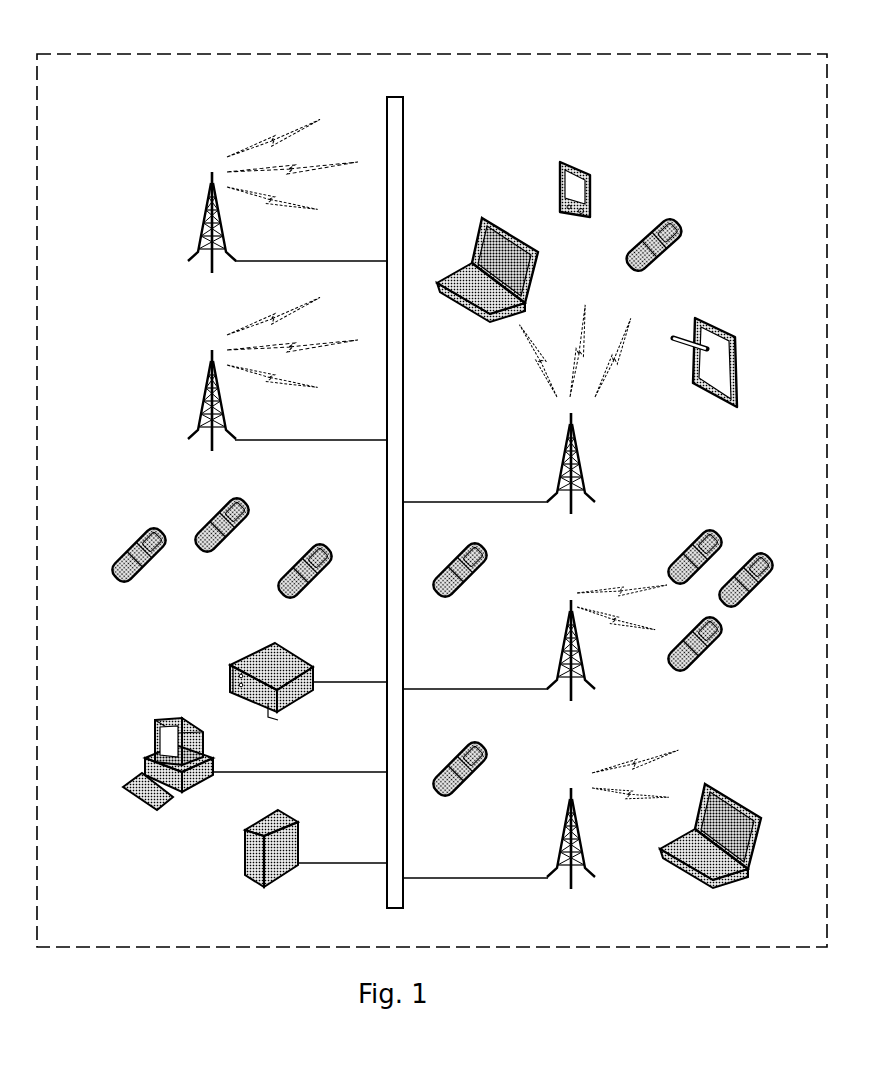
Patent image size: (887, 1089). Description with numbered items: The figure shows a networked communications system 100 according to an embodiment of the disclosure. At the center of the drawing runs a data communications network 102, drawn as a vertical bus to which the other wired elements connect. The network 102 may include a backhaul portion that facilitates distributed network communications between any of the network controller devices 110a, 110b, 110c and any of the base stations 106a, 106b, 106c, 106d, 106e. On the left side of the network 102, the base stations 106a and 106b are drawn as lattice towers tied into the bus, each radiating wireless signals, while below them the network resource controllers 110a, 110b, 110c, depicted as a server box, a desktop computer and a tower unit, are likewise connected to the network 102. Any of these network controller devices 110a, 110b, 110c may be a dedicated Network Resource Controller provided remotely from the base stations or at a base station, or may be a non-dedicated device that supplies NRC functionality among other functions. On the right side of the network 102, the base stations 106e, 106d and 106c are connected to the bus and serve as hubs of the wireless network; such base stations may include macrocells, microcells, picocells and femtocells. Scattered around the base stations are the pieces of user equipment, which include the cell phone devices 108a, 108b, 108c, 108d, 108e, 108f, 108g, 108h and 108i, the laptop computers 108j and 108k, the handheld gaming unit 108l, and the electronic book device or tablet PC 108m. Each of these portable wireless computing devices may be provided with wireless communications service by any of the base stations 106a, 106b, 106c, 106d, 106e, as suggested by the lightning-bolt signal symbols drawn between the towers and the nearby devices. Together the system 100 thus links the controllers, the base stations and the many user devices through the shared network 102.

The networked communications system 100 is at (300, 28).
The data communications network 102 is at (387, 104).
The base station 106a is at (205, 215).
The base station 106b is at (205, 398).
The base station 106c is at (560, 828).
The base station 106d is at (560, 648).
The base station 106e is at (588, 472).
The cell phone device 108a is at (128, 552).
The cell phone device 108b is at (220, 508).
The cell phone device 108c is at (288, 592).
The cell phone device 108d is at (482, 750).
The cell phone device 108e is at (708, 665).
The cell phone device 108f is at (760, 594).
The cell phone device 108g is at (715, 535).
The cell phone device 108h is at (482, 553).
The cell phone device 108i is at (682, 230).
The laptop computer 108j is at (733, 790).
The laptop computer 108k is at (483, 218).
The handheld gaming unit 108l is at (592, 180).
The electronic book device or tablet PC 108m is at (735, 330).
The network resource controller 110a is at (228, 683).
The network resource controller 110b is at (152, 725).
The network resource controller 110c is at (245, 868).